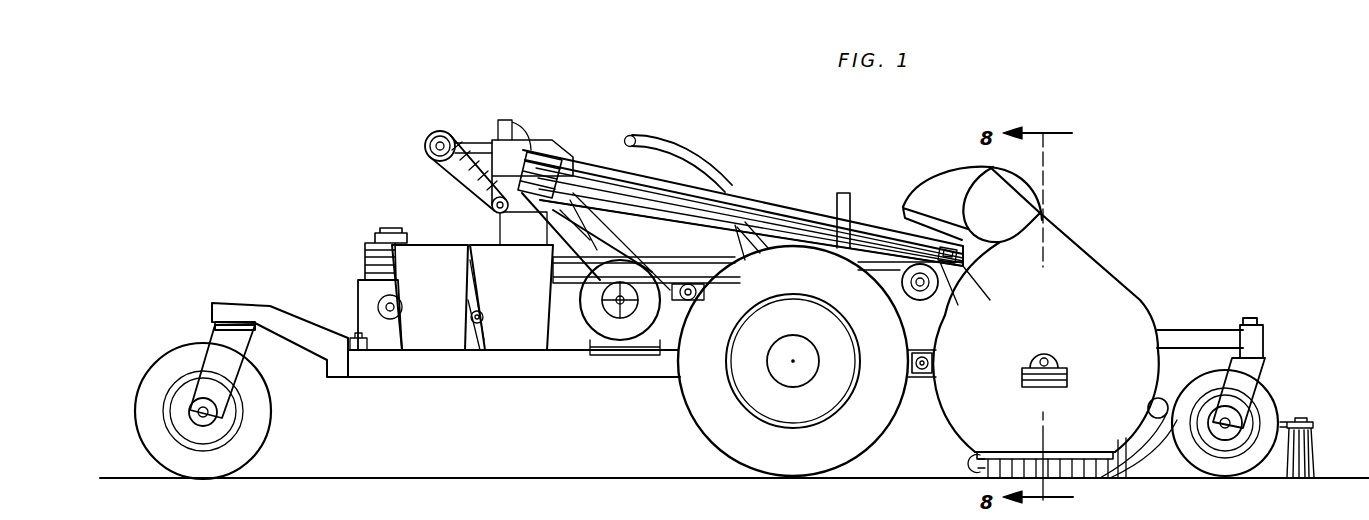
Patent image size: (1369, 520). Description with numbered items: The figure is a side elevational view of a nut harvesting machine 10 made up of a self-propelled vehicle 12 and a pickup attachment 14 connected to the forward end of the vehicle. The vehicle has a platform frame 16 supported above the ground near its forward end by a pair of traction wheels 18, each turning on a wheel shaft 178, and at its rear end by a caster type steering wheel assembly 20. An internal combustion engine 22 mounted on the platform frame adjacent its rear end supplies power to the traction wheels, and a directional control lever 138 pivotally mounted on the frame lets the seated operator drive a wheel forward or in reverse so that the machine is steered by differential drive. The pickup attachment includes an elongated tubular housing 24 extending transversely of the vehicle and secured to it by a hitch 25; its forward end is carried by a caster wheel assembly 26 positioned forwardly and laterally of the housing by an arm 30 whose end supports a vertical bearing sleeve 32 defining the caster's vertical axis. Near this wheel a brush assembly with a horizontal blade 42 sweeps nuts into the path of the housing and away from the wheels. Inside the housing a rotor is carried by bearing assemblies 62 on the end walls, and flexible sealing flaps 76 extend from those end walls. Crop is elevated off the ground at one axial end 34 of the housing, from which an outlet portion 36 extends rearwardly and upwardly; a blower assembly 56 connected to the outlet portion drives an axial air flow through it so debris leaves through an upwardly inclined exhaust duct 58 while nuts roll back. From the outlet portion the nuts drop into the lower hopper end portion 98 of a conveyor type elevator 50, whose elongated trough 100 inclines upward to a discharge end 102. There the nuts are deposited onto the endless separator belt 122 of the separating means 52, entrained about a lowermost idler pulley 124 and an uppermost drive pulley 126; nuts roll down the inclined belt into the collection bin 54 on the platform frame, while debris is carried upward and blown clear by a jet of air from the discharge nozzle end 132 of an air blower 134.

The harvesting machine 10 is at (362, 181).
The self-propelled vehicle 12 is at (272, 300).
The pickup attachment 14 is at (1046, 326).
The platform frame 16 is at (528, 358).
The traction wheels 18 is at (703, 390).
The caster type steering wheel assembly 20 is at (180, 344).
The internal combustion engine 22 is at (357, 290).
The tubular housing 24 is at (1148, 306).
The hitch 25 is at (927, 376).
The caster wheel assembly 26 is at (1270, 365).
The arm 30 is at (1182, 340).
The vertical bearing sleeve 32 is at (1256, 338).
The axial end 34 is at (1105, 290).
The outlet portion 36 is at (943, 186).
The horizontal blade 42 is at (1283, 420).
The conveyor type elevator 50 is at (756, 197).
The separating means 52 is at (465, 190).
The collection bin 54 is at (505, 328).
The blower assembly 56 is at (1024, 178).
The exhaust duct 58 is at (1005, 218).
The bearing assemblies 62 is at (1050, 357).
The flexible sealing flaps 76 is at (1078, 470).
The lower hopper end portion 98 is at (915, 227).
The elongated trough 100 is at (722, 229).
The discharge end 102 is at (505, 124).
The endless separator belt 122 is at (476, 196).
The lowermost idler pulley 124 is at (446, 177).
The uppermost drive pulley 126 is at (438, 134).
The discharge nozzle end 132 is at (535, 205).
The air blower 134 is at (640, 270).
The directional control lever 138 is at (656, 145).
The wheel shaft 178 is at (836, 518).